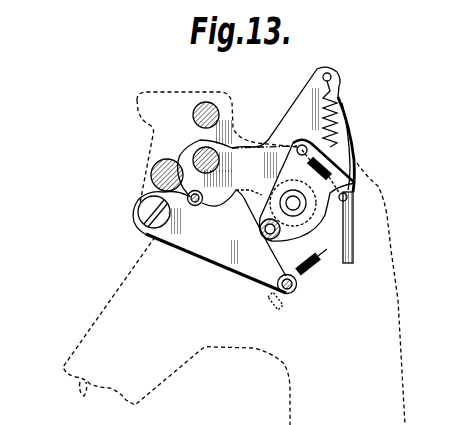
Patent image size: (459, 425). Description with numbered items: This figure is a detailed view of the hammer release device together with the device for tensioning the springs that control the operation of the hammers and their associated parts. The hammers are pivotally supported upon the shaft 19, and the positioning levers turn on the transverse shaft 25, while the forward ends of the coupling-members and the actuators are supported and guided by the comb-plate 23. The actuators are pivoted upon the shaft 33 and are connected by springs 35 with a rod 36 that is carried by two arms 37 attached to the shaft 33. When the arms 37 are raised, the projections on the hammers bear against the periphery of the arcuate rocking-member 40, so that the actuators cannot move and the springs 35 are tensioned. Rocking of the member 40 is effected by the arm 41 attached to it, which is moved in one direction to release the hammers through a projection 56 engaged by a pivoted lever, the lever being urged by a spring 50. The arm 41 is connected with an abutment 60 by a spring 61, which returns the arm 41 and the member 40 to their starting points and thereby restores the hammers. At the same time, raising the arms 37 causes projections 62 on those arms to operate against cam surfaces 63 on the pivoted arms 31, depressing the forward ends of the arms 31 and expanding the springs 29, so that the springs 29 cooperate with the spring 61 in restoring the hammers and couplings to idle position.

The shaft 19 is at (210, 104).
The comb-plate 23 is at (355, 142).
The transverse shaft 25 is at (142, 210).
The springs 29 is at (308, 257).
The pivoted arms 31 is at (234, 241).
The shaft 33 is at (200, 153).
The springs 35 is at (342, 122).
The rod 36 is at (331, 76).
The arms 37 is at (308, 146).
The rocking-member 40 is at (298, 200).
The arm 41 is at (317, 220).
The spring 50 is at (293, 292).
The projection 56 is at (271, 240).
The abutment 60 is at (347, 197).
The spring 61 is at (322, 153).
The projections 62 is at (195, 207).
The cam surfaces 63 is at (224, 207).